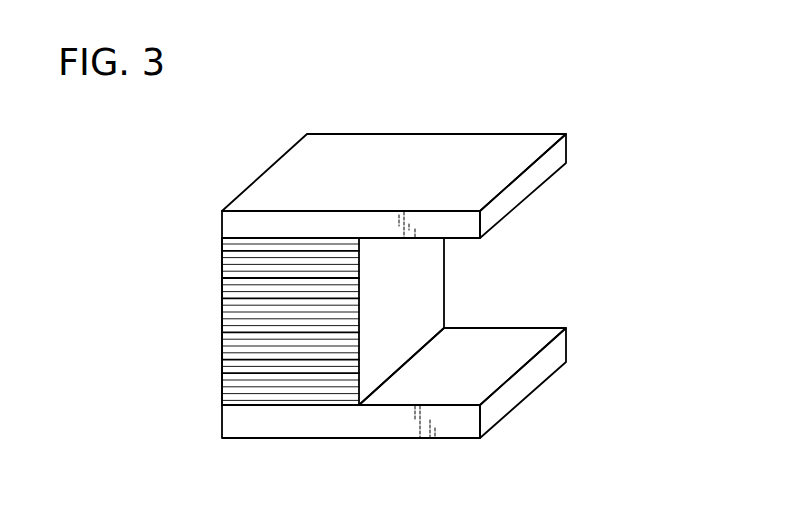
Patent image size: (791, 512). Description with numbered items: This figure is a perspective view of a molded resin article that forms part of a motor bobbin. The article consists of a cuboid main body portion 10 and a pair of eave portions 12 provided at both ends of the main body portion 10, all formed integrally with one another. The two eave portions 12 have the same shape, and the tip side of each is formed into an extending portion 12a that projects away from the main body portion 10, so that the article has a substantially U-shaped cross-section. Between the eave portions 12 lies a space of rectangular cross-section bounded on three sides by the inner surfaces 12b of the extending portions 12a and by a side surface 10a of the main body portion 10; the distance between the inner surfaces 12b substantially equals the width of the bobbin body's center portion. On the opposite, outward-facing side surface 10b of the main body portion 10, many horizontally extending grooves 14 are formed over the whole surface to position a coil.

The main body portion 10 is at (222, 364).
The side surface of the main body portion 10a is at (422, 300).
The outward-facing side surface of the main body portion 10b is at (237, 273).
The eave portion 12 is at (345, 152).
The extending portion 12a is at (512, 152).
The inner surface of the extending portion 12b is at (523, 198).
The grooves 14 is at (232, 320).